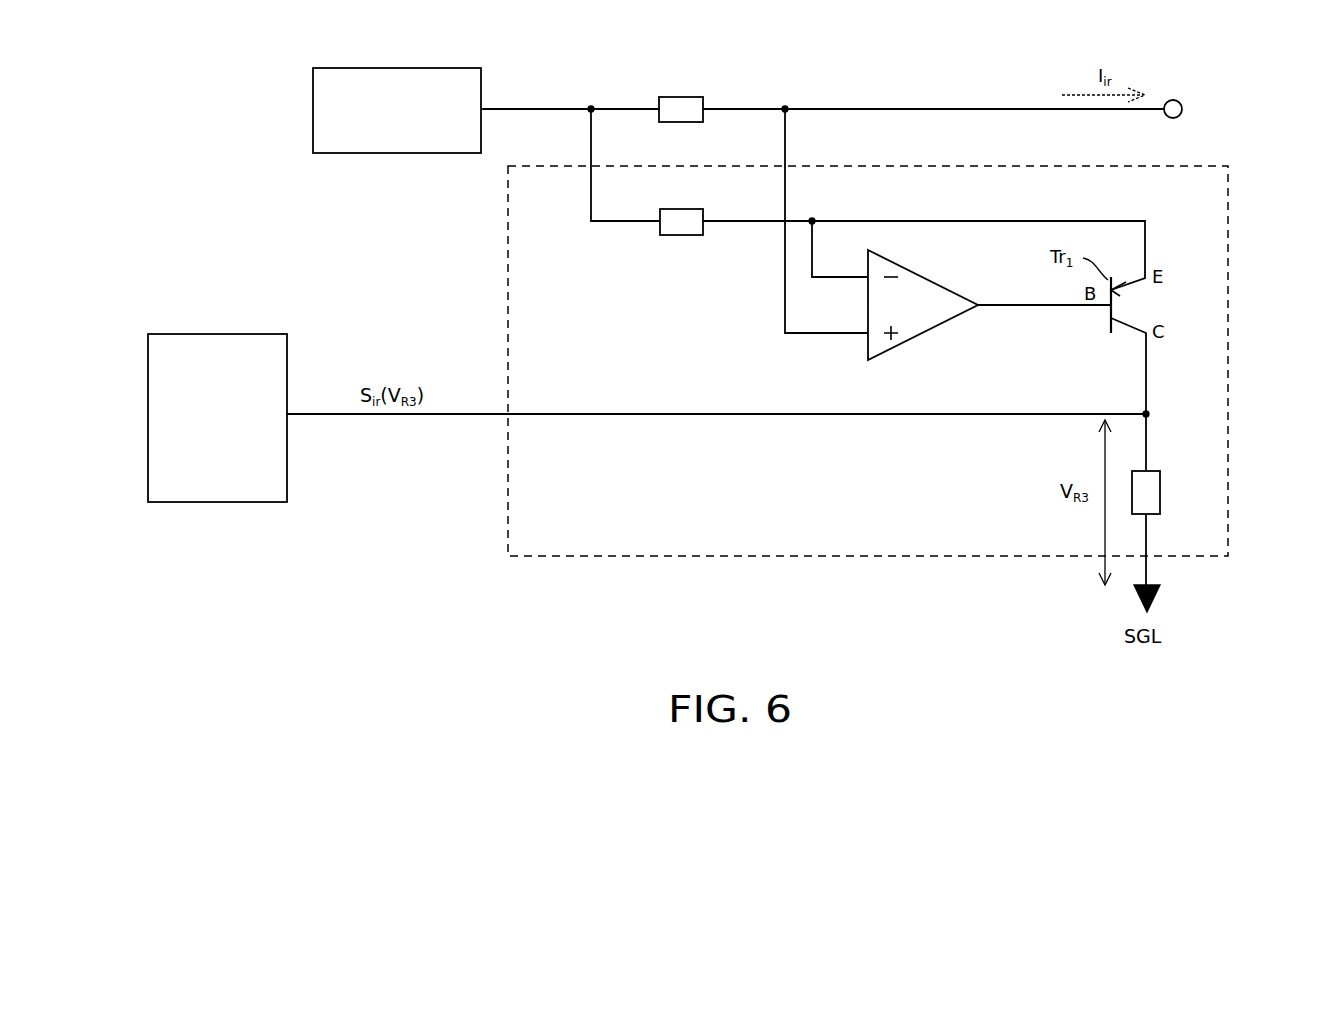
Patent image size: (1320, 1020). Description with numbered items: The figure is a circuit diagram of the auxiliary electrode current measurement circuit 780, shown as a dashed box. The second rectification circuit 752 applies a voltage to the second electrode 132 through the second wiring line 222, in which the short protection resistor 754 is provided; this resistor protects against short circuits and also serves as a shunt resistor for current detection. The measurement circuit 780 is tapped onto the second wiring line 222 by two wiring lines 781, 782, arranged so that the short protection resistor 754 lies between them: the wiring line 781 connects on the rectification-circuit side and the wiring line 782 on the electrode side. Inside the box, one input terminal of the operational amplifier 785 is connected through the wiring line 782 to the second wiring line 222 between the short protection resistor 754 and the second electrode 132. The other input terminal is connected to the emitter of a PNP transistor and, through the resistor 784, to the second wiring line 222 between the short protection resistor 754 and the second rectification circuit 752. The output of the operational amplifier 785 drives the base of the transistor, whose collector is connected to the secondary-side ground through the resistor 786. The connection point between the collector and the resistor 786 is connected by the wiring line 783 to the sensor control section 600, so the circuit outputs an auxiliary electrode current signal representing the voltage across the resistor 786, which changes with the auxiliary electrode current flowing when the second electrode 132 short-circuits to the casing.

The second rectification circuit 752 is at (396, 67).
The short protection resistor 754 is at (700, 96).
The second wiring line 222 is at (913, 108).
The second electrode 132 is at (1183, 104).
The wiring line 781 is at (592, 150).
The wiring line 782 is at (786, 150).
The auxiliary electrode current measurement circuit 780 is at (1230, 195).
The resistor 784 is at (660, 230).
The sensor control section 600 is at (218, 333).
The wiring line 783 is at (377, 416).
The operational amplifier 785 is at (930, 340).
The resistor 786 is at (1150, 470).